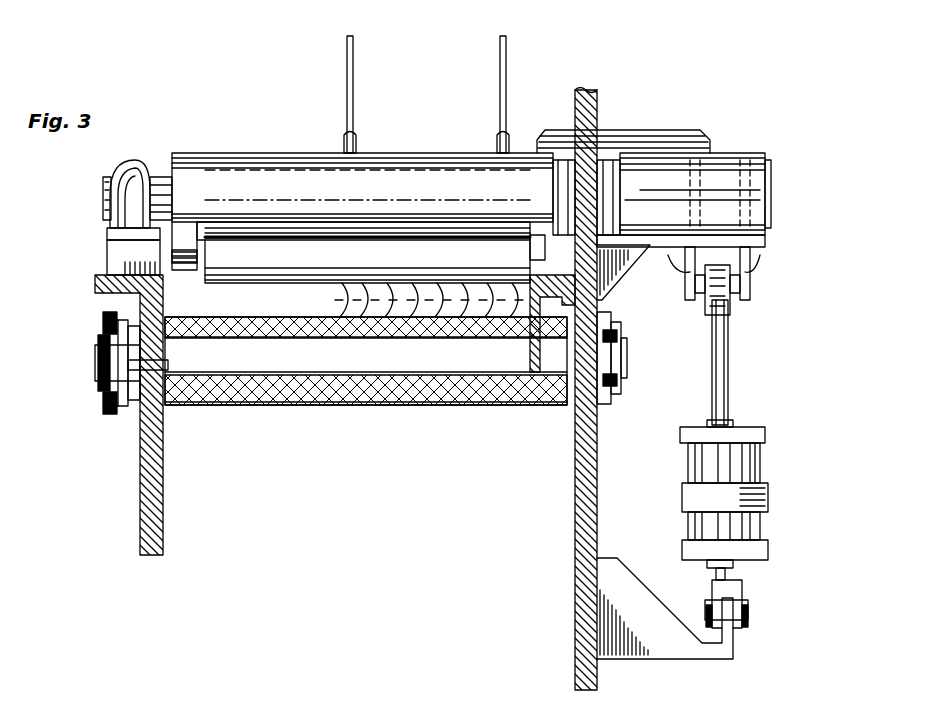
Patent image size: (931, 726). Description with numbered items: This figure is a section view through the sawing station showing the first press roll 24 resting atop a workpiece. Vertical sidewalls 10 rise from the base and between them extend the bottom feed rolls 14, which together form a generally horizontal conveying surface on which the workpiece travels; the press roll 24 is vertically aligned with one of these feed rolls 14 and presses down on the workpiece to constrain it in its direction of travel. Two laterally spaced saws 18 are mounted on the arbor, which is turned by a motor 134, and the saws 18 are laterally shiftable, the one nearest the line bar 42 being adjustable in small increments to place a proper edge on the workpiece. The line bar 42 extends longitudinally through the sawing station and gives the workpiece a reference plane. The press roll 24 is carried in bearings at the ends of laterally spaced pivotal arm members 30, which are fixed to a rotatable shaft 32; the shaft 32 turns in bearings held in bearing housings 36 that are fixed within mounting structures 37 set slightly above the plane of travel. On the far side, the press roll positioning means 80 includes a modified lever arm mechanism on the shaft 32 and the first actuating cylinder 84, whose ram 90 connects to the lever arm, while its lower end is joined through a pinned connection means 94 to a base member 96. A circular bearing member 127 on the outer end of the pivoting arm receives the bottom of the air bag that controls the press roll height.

The vertical sidewall 10 is at (140, 497).
The bottom feed roll 14 is at (292, 370).
The saw 18 is at (347, 65).
The first press roll 24 is at (272, 283).
The pivotal arm member 30 is at (185, 270).
The rotatable shaft 32 is at (103, 200).
The bearing housing 36 is at (120, 165).
The mounting structure 37 is at (107, 256).
The line bar 42 is at (533, 360).
The press roll positioning means 80 is at (778, 360).
The first actuating cylinder 84 is at (766, 465).
The ram 90 is at (728, 402).
The pinned connection means 94 is at (748, 612).
The base member 96 is at (735, 648).
The circular bearing member 127 is at (752, 265).
The motor 134 is at (700, 130).